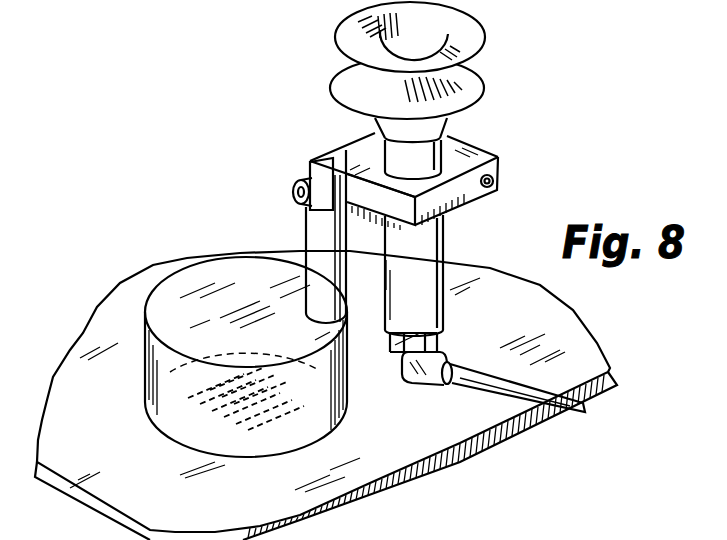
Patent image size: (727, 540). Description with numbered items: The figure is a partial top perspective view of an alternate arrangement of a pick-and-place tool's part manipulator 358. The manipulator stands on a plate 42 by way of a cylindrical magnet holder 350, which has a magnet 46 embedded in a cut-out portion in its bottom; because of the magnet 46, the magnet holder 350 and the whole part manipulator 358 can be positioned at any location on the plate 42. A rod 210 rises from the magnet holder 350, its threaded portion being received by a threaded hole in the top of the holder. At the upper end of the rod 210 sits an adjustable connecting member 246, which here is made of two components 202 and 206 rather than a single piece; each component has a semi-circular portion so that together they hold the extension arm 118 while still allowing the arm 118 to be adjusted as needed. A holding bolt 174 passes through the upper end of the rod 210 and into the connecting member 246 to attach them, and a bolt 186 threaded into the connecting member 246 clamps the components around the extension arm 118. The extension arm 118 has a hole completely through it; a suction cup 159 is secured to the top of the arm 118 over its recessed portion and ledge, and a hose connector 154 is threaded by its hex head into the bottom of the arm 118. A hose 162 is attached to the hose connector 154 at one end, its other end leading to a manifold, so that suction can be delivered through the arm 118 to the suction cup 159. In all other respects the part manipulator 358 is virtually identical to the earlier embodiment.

The plate 42 is at (120, 298).
The magnet 46 is at (178, 420).
The extension arm 118 is at (415, 240).
The hose connector 154 is at (432, 370).
The suction cup 159 is at (480, 38).
The hose 162 is at (528, 392).
The holding bolt 174 is at (293, 184).
The bolt 186 is at (496, 183).
The component of adjustable connecting member 202 is at (477, 153).
The component of adjustable connecting member 206 is at (347, 143).
The rod 210 is at (306, 226).
The adjustable connecting member 246 is at (612, 104).
The magnet holder 350 is at (193, 288).
The part manipulator 358 is at (241, 127).